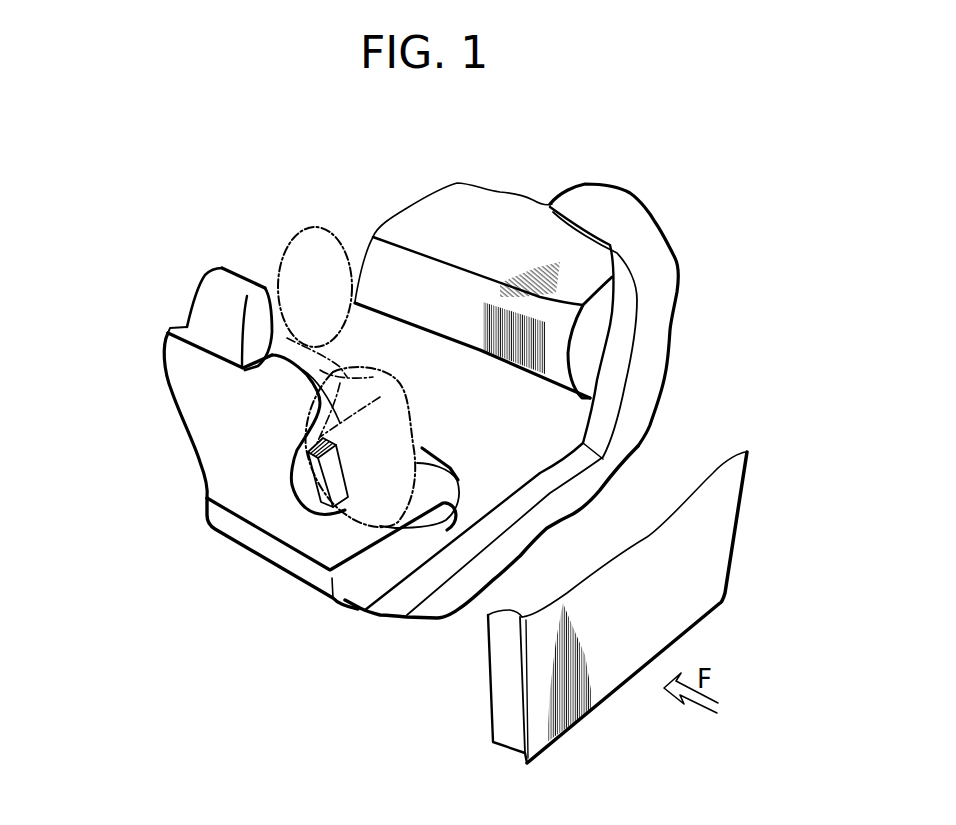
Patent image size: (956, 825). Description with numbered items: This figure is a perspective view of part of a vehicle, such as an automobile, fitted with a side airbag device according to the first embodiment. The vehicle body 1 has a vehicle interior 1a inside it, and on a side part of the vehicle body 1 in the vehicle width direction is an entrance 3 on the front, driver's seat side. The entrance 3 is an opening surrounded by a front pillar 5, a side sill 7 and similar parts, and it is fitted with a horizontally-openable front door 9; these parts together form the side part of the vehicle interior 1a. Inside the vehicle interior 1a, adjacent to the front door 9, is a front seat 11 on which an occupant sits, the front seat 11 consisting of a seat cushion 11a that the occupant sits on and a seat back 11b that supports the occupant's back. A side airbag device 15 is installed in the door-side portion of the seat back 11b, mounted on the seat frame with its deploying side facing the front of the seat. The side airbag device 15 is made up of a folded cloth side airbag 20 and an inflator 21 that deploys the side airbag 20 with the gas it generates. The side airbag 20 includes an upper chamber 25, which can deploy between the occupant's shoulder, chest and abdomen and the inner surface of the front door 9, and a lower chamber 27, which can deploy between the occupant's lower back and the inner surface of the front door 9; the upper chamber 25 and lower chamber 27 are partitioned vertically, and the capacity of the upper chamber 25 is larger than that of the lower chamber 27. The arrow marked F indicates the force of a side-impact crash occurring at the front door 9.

The vehicle body 1 is at (662, 220).
The vehicle interior 1a is at (428, 163).
The entrance 3 is at (517, 473).
The front pillar 5 is at (605, 195).
The side sill 7 is at (440, 605).
The front door 9 is at (602, 675).
The front seat 11 is at (274, 438).
The seat cushion 11a is at (250, 536).
The seat back 11b is at (210, 447).
The side airbag device 15 is at (320, 532).
The side airbag 20 is at (342, 453).
The inflator 21 is at (307, 463).
The upper chamber 25 is at (407, 410).
The lower chamber 27 is at (432, 452).